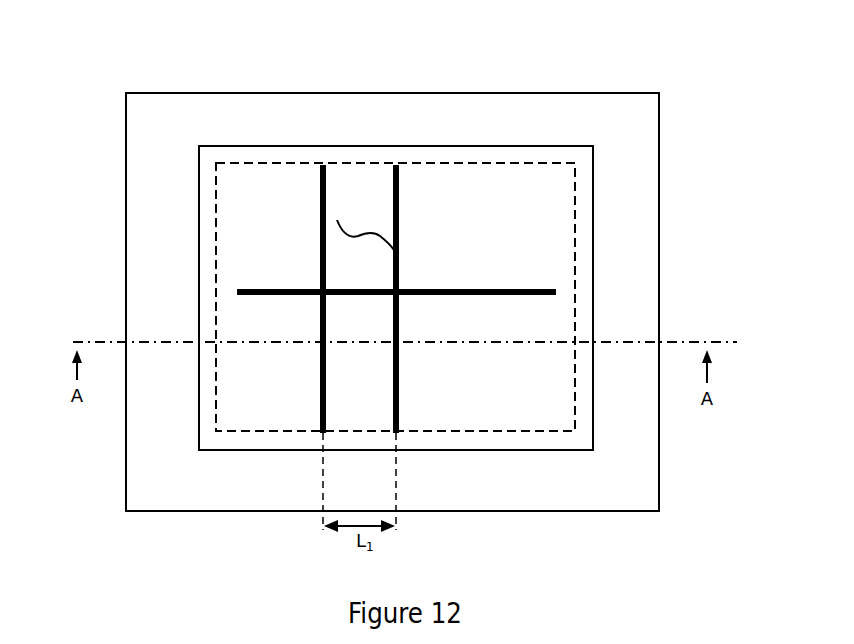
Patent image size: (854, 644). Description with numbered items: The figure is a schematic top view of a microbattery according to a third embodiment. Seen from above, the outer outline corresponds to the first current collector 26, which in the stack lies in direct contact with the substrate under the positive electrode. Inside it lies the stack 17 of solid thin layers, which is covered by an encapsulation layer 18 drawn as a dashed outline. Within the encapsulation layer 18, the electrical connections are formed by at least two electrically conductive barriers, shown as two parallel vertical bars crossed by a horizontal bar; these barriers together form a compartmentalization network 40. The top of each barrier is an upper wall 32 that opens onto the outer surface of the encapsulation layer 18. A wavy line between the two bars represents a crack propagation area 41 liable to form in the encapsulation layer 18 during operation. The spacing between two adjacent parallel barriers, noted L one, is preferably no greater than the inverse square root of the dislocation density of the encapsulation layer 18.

The stack 17 is at (202, 229).
The encapsulation layer 18 is at (205, 283).
The first current collector 26 is at (304, 127).
The upper wall 32 is at (398, 218).
The compartmentalization network 40 is at (432, 270).
The crack propagation area 41 is at (358, 233).